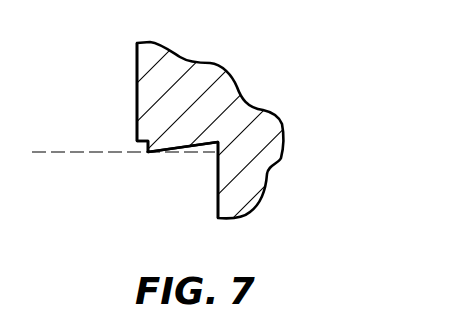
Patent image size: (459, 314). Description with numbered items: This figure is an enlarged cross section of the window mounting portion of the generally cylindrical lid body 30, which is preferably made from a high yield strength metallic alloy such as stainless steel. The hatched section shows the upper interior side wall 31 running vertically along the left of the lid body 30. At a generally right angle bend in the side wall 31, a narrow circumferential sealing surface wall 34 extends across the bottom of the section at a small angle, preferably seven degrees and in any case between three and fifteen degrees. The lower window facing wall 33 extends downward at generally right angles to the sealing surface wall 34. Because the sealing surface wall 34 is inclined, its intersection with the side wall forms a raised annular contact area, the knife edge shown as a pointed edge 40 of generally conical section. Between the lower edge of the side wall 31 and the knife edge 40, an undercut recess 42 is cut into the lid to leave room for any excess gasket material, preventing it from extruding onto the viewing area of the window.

The cylindrical lid body 30 is at (309, 109).
The upper interior side wall 31 is at (136, 72).
The lower window facing wall 33 is at (217, 211).
The sealing surface wall 34 is at (188, 147).
The pointed edge 40 is at (149, 153).
The undercut recess 42 is at (137, 141).